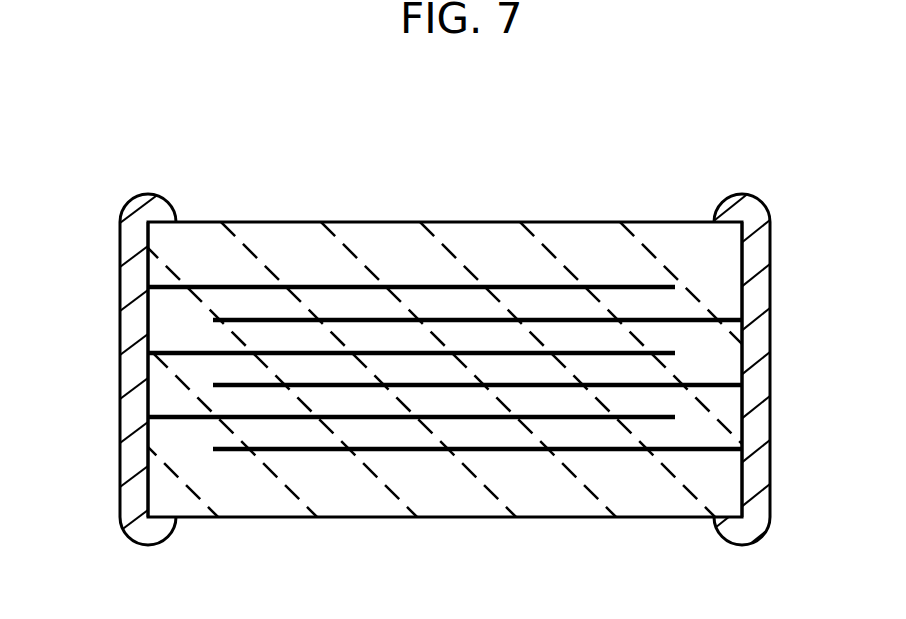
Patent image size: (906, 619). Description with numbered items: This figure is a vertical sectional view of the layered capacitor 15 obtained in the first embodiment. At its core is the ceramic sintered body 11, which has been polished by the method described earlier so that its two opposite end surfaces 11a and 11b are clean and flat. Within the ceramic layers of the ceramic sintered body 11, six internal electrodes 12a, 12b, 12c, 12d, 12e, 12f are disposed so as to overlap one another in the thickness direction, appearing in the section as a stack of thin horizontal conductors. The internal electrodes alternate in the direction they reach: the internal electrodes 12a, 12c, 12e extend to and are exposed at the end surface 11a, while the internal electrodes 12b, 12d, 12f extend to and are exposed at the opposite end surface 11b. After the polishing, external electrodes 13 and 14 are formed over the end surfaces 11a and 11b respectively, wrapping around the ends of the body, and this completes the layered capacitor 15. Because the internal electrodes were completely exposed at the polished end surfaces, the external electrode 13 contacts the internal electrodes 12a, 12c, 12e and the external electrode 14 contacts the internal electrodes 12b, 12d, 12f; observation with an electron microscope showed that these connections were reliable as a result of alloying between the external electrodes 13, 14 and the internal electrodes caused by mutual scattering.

The layered capacitor 15 is at (166, 166).
The ceramic sintered body 11 is at (513, 222).
The end surface 11a is at (150, 274).
The end surface 11b is at (741, 260).
The internal electrode 12a is at (332, 287).
The internal electrode 12b is at (440, 320).
The internal electrode 12c is at (613, 353).
The internal electrode 12d is at (368, 387).
The internal electrode 12e is at (487, 419).
The internal electrode 12f is at (598, 450).
The external electrode 13 is at (118, 375).
The external electrode 14 is at (770, 343).